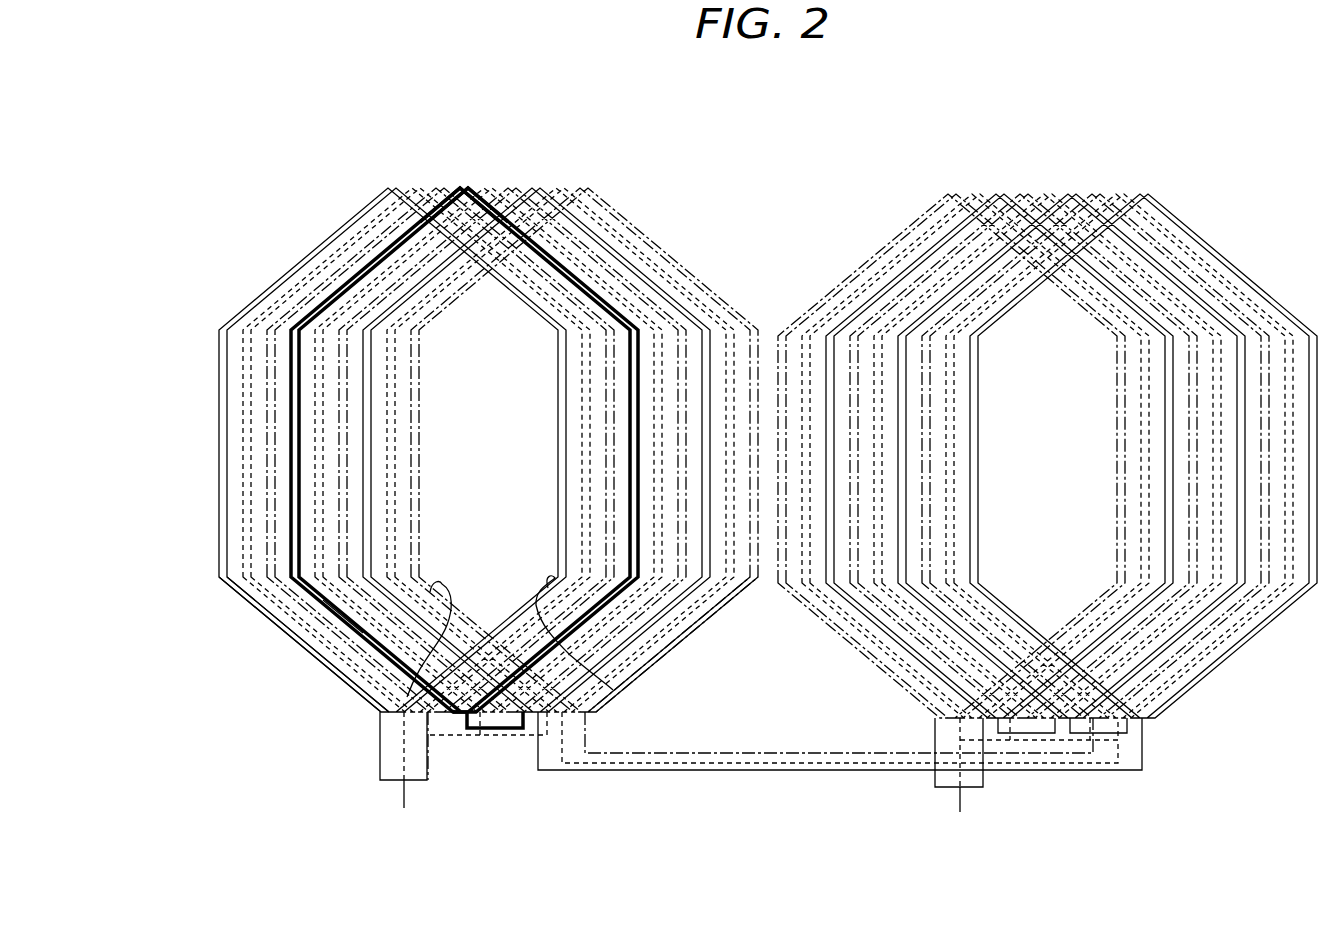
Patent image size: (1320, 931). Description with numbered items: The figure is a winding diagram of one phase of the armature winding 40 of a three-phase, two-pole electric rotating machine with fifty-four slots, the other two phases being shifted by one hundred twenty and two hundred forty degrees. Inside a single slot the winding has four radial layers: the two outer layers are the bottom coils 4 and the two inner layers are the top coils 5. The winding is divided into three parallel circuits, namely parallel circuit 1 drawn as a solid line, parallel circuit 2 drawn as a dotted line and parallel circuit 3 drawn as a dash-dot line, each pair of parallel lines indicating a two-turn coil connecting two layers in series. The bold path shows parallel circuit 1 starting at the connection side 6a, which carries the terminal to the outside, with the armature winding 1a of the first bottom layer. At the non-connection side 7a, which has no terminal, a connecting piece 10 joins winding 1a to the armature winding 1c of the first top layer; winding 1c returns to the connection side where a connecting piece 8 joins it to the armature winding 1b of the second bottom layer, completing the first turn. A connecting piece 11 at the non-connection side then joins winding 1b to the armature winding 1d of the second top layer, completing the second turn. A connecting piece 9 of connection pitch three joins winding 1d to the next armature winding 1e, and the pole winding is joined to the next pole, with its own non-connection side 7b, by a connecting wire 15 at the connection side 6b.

The armature winding 40 is at (942, 124).
The non-connection side 7a is at (572, 188).
The non-connection side 7b is at (1127, 193).
The parallel circuit 1 is at (290, 405).
The parallel circuit 2 is at (312, 478).
The parallel circuit 3 is at (338, 550).
The armature winding of the first layer of the bottom coil 1a is at (312, 603).
The armature winding of the second layer of the bottom coil 1b is at (355, 636).
The armature winding of the first layer of the top coil 1c is at (622, 598).
The armature winding of the second layer of the top coil 1d is at (590, 623).
The next armature winding 1e is at (470, 627).
The bottom coils 4 is at (346, 682).
The top coils 5 is at (640, 697).
The connection side 6a is at (378, 713).
The connection side 6b is at (1150, 752).
The connecting piece 8 is at (468, 732).
The connecting piece 9 is at (492, 740).
The connecting piece 10 is at (458, 190).
The connecting piece 11 is at (476, 190).
The connecting wire 15 is at (800, 778).